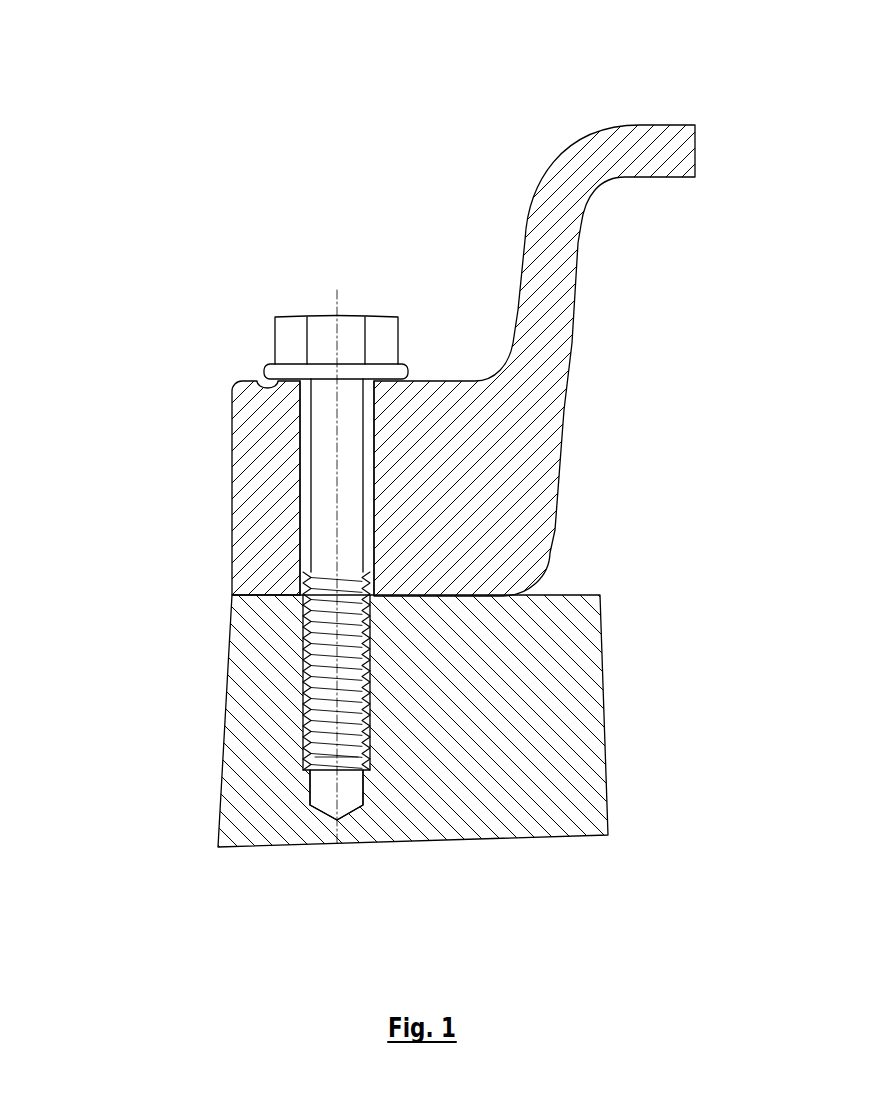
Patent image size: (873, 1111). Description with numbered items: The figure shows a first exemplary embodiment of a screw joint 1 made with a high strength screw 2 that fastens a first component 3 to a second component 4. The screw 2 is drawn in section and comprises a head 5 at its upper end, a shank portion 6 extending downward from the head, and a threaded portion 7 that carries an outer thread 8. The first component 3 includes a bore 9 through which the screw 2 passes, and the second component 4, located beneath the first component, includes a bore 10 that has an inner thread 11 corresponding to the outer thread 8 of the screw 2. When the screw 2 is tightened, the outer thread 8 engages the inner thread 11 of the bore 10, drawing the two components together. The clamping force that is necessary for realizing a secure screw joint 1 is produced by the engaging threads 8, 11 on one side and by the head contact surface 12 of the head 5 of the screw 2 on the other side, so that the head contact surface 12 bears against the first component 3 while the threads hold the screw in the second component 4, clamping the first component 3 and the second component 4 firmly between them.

The screw joint 1 is at (190, 147).
The high strength screw 2 is at (436, 421).
The first component 3 is at (549, 217).
The second component 4 is at (583, 613).
The head 5 is at (385, 325).
The shank portion 6 is at (322, 416).
The threaded portion 7 is at (316, 665).
The outer thread 8 is at (303, 687).
The bore 9 is at (367, 443).
The bore 10 is at (348, 783).
The inner thread 11 is at (365, 748).
The head contact surface 12 is at (265, 387).